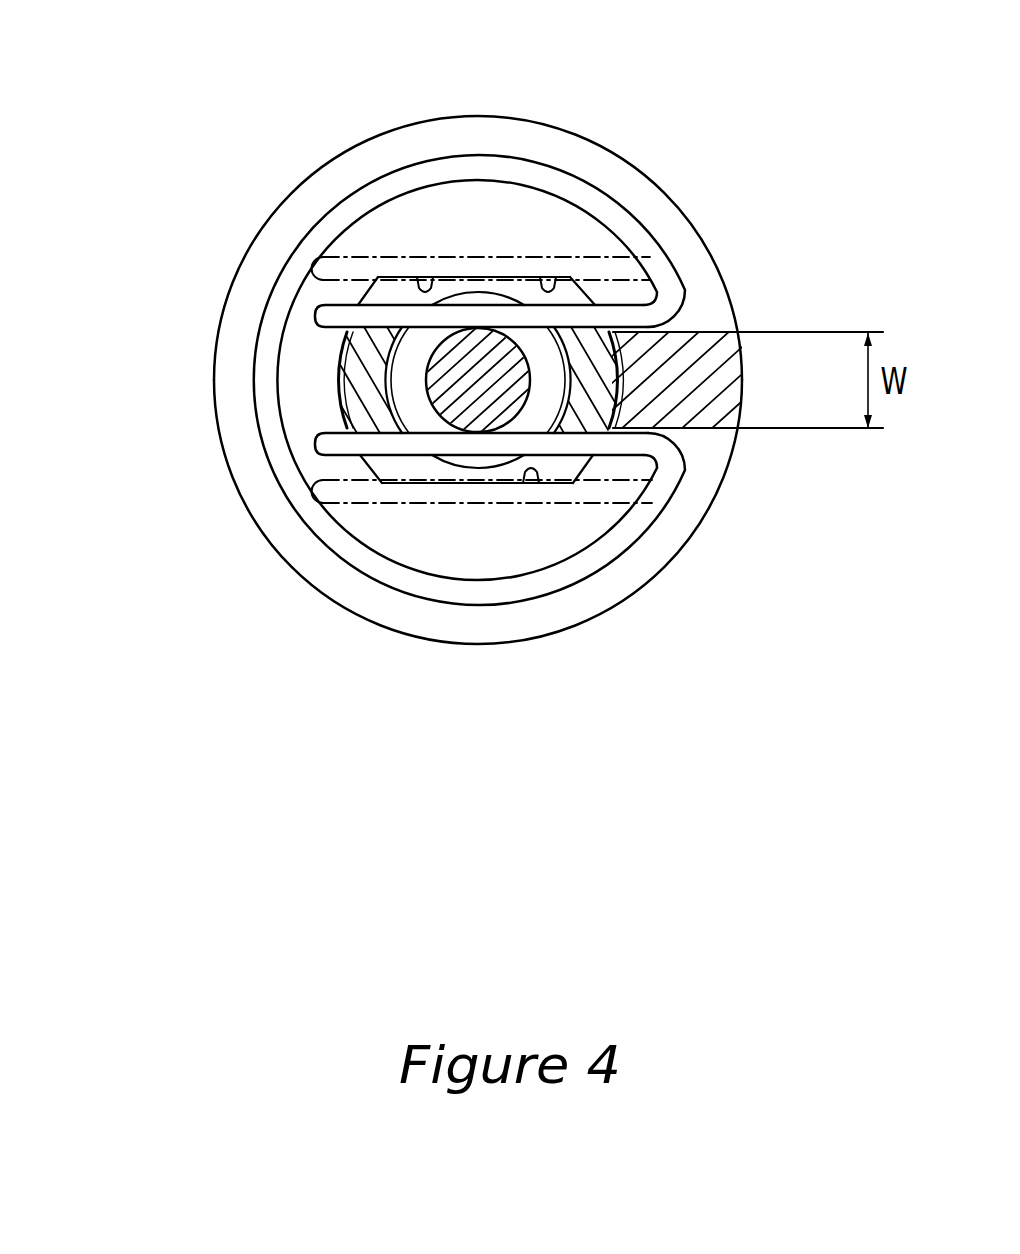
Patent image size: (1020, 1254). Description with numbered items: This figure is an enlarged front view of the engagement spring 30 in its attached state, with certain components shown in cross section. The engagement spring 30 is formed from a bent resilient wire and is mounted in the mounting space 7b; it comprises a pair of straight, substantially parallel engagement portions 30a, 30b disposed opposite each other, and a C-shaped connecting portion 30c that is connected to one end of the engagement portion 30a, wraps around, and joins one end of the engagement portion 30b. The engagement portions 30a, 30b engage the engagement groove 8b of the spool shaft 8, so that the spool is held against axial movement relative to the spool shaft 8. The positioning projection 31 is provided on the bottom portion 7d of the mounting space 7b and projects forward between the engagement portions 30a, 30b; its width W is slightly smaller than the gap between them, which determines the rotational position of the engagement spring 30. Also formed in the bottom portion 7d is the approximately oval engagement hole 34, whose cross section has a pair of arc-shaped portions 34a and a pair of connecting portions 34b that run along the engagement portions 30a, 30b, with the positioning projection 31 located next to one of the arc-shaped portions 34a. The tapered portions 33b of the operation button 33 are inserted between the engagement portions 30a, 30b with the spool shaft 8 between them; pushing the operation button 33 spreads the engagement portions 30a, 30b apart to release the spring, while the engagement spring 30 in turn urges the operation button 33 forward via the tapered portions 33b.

The mounting space 7b is at (690, 233).
The bottom portion of the mounting space 7d is at (447, 620).
The spool shaft 8 is at (517, 382).
The engagement groove 8b is at (437, 458).
The engagement spring 30 is at (400, 217).
The engagement portion 30a is at (352, 313).
The engagement portion 30b is at (338, 490).
The C-shaped connecting portion 30c is at (292, 490).
The positioning projection 31 is at (717, 407).
The operation button 33 is at (330, 380).
The tapered portions 33b is at (358, 363).
The engagement hole 34 is at (438, 276).
The arc-shaped portions 34a is at (352, 390).
The connecting portions 34b is at (547, 290).